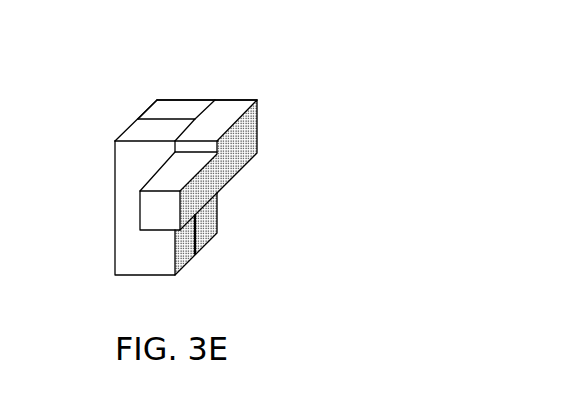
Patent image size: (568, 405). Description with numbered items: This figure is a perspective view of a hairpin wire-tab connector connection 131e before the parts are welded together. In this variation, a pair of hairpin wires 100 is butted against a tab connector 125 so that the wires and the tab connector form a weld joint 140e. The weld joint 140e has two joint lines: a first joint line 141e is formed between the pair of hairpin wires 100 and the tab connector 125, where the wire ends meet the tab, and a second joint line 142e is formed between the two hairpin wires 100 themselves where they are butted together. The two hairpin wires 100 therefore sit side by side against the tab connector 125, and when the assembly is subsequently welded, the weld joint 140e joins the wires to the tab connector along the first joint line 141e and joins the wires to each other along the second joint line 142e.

The hairpin wire 100 is at (115, 245).
The tab connector 125 is at (250, 138).
The hairpin wire-tab connector connection 131e is at (352, 62).
The weld joint 140e is at (185, 65).
The first joint line 141e is at (205, 118).
The second joint line 142e is at (158, 119).